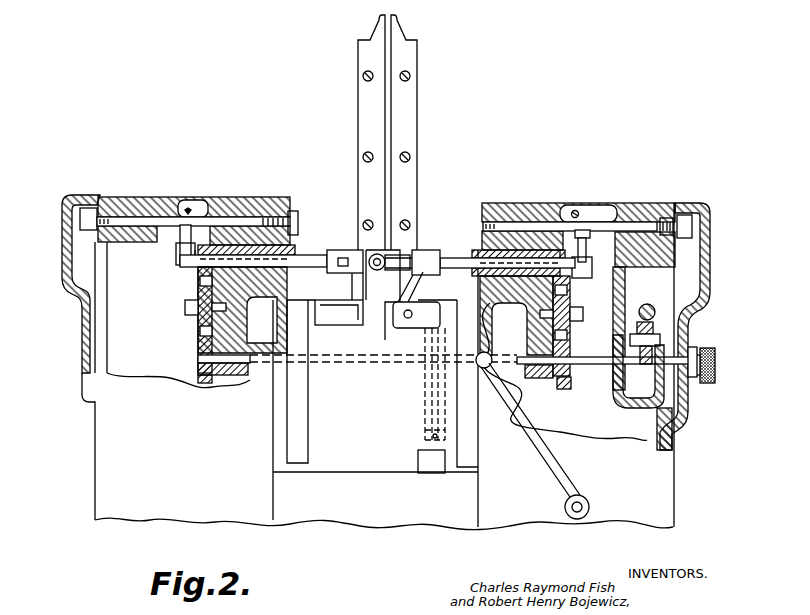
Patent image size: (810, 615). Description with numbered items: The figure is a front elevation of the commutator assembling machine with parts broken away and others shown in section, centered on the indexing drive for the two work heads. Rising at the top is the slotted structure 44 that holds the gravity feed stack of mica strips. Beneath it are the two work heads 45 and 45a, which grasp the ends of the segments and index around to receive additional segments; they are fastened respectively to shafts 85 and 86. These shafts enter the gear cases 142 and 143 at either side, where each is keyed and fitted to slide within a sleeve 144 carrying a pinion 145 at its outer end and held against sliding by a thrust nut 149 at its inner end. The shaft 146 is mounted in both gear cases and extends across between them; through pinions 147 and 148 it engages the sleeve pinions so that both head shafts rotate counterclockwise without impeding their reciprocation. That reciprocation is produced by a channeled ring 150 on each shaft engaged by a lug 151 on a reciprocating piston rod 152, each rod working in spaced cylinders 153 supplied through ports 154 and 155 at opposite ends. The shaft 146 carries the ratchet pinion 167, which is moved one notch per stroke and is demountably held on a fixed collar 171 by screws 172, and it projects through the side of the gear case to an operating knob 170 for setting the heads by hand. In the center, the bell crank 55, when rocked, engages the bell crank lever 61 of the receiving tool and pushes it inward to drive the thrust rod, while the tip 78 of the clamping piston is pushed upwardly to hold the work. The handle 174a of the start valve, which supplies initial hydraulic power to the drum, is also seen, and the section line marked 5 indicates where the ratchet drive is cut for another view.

The slotted structure 44 is at (418, 57).
The gear case 143 is at (120, 333).
The sleeves 144 is at (275, 200).
The reciprocating piston rod 152 is at (182, 200).
The cylinders 153 is at (122, 222).
The port 154 is at (292, 211).
The port 155 is at (100, 200).
The gear case 142 is at (614, 215).
The lug 151 is at (178, 248).
The channeled ring 150 is at (182, 263).
The thrust nut 149 is at (303, 250).
The pinion 145 is at (198, 276).
The pinion 148 is at (190, 325).
The pinion 147 is at (196, 347).
The shaft 146 is at (262, 375).
The work head 45 is at (346, 238).
The shaft 85 is at (314, 285).
The bell crank lever 61 is at (392, 248).
The work head 45a is at (400, 257).
The shaft 86 is at (458, 253).
The bell crank 55 is at (418, 292).
The tip of piston 78 is at (423, 402).
The handle 174a is at (530, 455).
The operating knob 170 is at (716, 372).
The screws 172 is at (655, 345).
The ratchet pinion 167 is at (665, 360).
The fixed collar 171 is at (620, 392).
The section line 5 is at (666, 245).